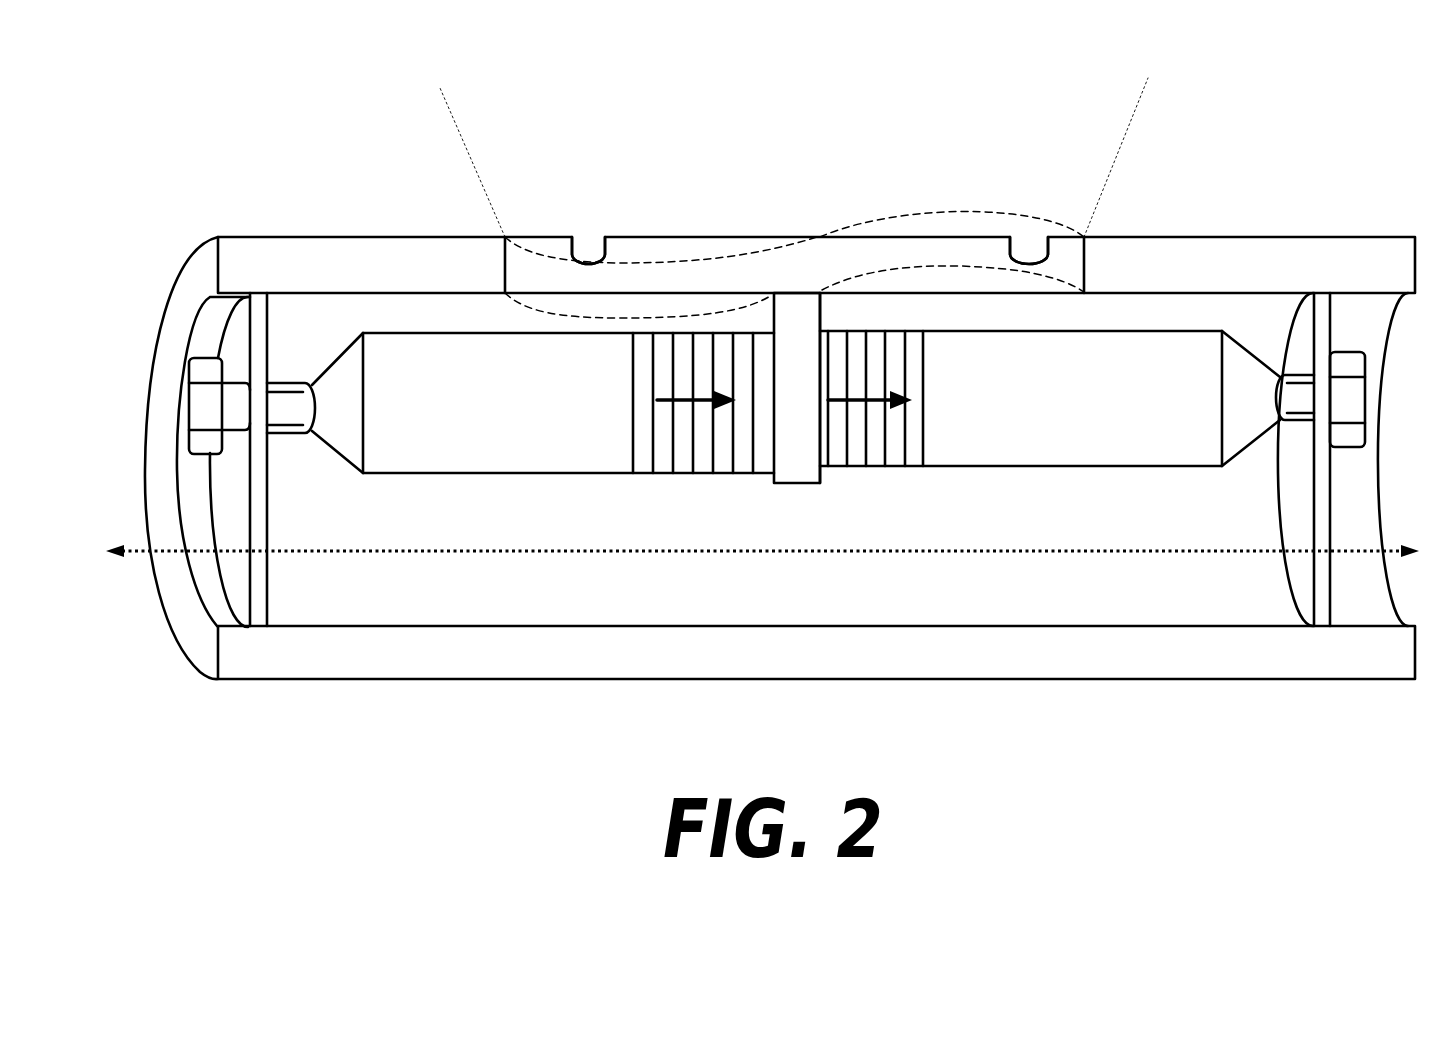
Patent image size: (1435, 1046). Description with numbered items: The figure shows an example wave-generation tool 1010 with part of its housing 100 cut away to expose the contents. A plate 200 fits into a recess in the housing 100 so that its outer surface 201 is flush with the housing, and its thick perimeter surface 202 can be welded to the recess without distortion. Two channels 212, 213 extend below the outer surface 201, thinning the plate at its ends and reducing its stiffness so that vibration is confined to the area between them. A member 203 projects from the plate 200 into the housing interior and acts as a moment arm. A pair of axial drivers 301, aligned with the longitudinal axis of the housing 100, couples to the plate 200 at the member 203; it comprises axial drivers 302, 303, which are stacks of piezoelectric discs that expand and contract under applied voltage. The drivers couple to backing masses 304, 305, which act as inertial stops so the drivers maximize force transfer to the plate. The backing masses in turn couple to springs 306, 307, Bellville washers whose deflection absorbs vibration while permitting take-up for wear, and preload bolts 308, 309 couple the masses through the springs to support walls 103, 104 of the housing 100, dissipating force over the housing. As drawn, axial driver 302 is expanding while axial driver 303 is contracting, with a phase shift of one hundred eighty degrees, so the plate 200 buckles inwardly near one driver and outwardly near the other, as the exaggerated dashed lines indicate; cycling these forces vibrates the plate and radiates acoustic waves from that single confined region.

The housing 100 is at (355, 257).
The wave-generation tool 1010 is at (475, 702).
The plate 200 is at (810, 285).
The outer surface 201 is at (735, 237).
The perimeter surface 202 is at (517, 280).
The member 203 is at (826, 305).
The channel 212 is at (590, 245).
The channel 213 is at (1032, 245).
The support wall 103 is at (275, 603).
The support wall 104 is at (1290, 593).
The pair of axial drivers 301 is at (762, 550).
The axial driver 302 is at (640, 476).
The axial driver 303 is at (828, 476).
The backing mass 304 is at (553, 414).
The backing mass 305 is at (1087, 414).
The spring 306 is at (332, 430).
The spring 307 is at (1235, 440).
The preload bolt 308 is at (300, 405).
The preload bolt 309 is at (1293, 398).